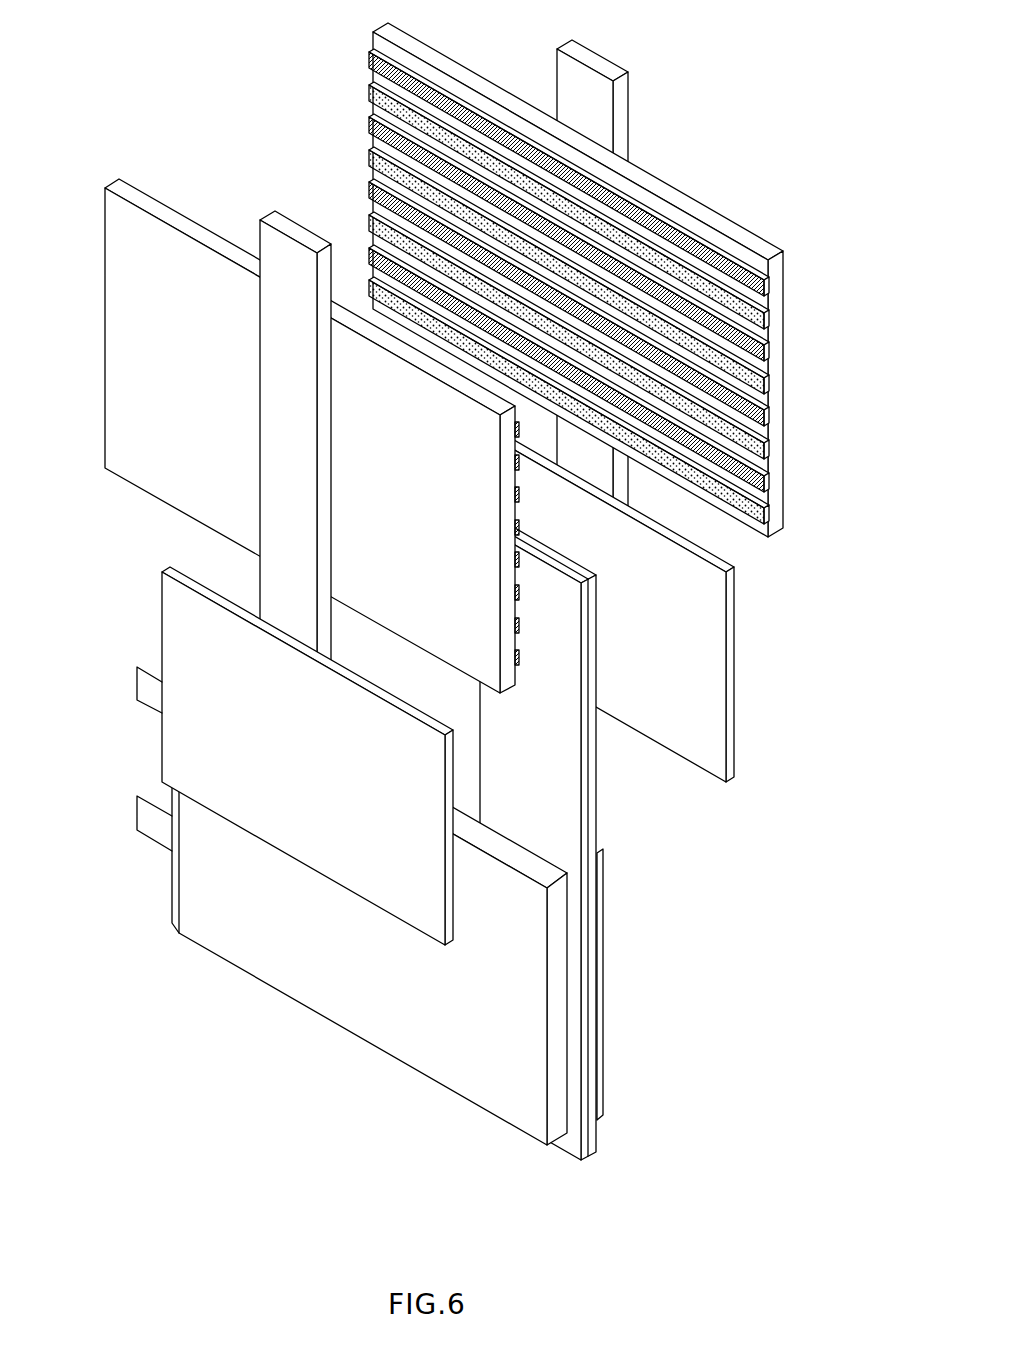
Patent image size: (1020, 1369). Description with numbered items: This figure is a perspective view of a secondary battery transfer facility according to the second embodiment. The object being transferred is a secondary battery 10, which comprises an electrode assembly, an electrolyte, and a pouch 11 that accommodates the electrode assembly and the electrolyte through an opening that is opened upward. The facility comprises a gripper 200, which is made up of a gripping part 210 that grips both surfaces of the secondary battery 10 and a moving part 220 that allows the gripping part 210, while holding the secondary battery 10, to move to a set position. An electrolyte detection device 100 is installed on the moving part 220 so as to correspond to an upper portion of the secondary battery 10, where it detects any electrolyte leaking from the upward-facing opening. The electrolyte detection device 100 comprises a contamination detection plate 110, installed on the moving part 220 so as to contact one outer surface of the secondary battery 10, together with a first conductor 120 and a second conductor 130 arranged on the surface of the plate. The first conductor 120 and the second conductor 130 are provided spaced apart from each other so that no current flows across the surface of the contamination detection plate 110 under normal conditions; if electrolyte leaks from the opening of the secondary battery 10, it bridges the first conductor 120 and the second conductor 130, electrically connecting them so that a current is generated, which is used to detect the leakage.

The secondary battery 10 is at (622, 935).
The pouch 11 is at (605, 1065).
The electrolyte detection device 100 is at (606, 280).
The contamination detection plate 110 is at (752, 238).
The first conductor 120 is at (771, 290).
The second conductor 130 is at (771, 322).
The gripper 200 is at (299, 678).
The gripping part 210 is at (271, 756).
The moving part 220 is at (272, 540).